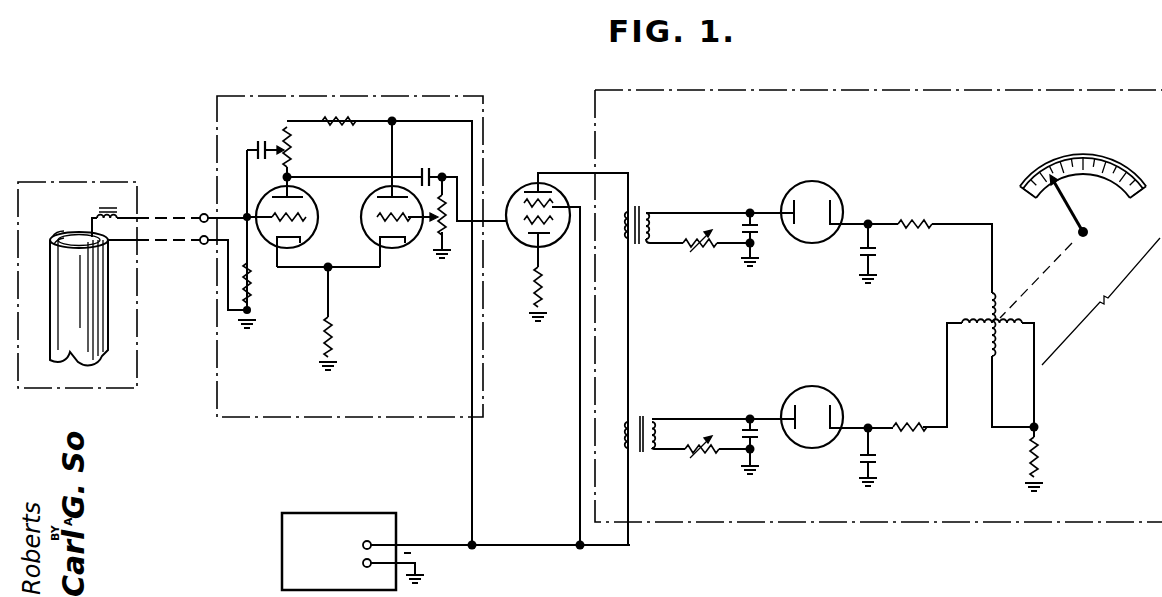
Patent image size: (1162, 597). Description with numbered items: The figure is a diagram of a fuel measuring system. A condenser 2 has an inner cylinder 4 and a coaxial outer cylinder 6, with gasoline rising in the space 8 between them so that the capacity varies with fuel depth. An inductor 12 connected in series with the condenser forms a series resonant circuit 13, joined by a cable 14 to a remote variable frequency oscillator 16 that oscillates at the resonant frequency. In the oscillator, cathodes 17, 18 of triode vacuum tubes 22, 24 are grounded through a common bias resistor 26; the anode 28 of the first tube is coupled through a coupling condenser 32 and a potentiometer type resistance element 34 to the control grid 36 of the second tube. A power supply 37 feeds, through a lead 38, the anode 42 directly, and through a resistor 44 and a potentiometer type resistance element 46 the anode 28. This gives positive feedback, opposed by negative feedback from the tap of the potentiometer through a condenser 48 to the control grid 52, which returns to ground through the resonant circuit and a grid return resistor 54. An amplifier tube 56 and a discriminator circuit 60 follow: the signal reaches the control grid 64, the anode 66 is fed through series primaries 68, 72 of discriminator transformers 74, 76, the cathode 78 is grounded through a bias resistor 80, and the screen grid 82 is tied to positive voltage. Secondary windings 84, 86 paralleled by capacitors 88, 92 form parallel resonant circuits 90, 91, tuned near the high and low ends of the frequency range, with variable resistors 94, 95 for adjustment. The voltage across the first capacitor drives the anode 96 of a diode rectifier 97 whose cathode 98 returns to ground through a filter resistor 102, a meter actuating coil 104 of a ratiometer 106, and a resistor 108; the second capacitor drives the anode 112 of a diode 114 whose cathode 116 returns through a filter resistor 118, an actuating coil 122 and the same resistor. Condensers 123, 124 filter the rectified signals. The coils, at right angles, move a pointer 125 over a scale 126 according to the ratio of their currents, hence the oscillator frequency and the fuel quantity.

The condenser 2 is at (118, 303).
The inner cylinder 4 is at (75, 236).
The outer cylinder 6 is at (48, 312).
The space 8 is at (62, 236).
The inductor 12 is at (107, 211).
The series resonant circuit 13 is at (76, 182).
The cable 14 is at (195, 216).
The variable frequency oscillator 16 is at (378, 96).
The cathode 17 is at (292, 252).
The cathode 18 is at (395, 252).
The triode vacuum tube 22 is at (315, 203).
The triode vacuum tube 24 is at (362, 221).
The common bias resistor 26 is at (334, 322).
The anode 28 is at (280, 178).
The coupling condenser 32 is at (428, 170).
The potentiometer type resistance element 34 is at (449, 217).
The control grid 36 is at (375, 225).
The power supply 37 is at (282, 560).
The lead 38 is at (470, 381).
The anode 42 is at (378, 196).
The resistor 44 is at (345, 130).
The potentiometer type resistance element 46 is at (292, 146).
The condenser 48 is at (268, 146).
The control grid 52 is at (268, 242).
The grid return resistor 54 is at (252, 283).
The amplifier tube 56 is at (520, 180).
The discriminator circuit 60 is at (915, 85).
The control grid 64 is at (548, 226).
The anode 66 is at (556, 188).
The primary 68 is at (626, 230).
The primary 72 is at (625, 440).
The discriminator transformer 74 is at (646, 208).
The discriminator transformer 76 is at (652, 420).
The cathode 78 is at (543, 240).
The bias resistor 80 is at (528, 288).
The screen grid 82 is at (530, 200).
The secondary winding 84 is at (655, 250).
The secondary winding 86 is at (660, 432).
The capacitor 88 is at (762, 232).
The parallel resonant circuit 90 is at (707, 200).
The parallel resonant circuit 91 is at (712, 405).
The capacitor 92 is at (762, 436).
The variable resistor 94 is at (716, 252).
The variable resistor 95 is at (706, 462).
The anode 96 is at (794, 196).
The diode rectifier 97 is at (826, 184).
The cathode 98 is at (842, 206).
The filter resistor 102 is at (930, 242).
The meter actuating coil 104 is at (986, 303).
The ratiometer 106 is at (1101, 301).
The resistor 108 is at (1040, 455).
The anode 112 is at (792, 404).
The diode 114 is at (820, 388).
The cathode 116 is at (838, 414).
The filter resistor 118 is at (898, 422).
The actuating coil 122 is at (974, 332).
The condenser 123 is at (884, 252).
The condenser 124 is at (884, 456).
The pointer 125 is at (1076, 207).
The scale 126 is at (1090, 158).